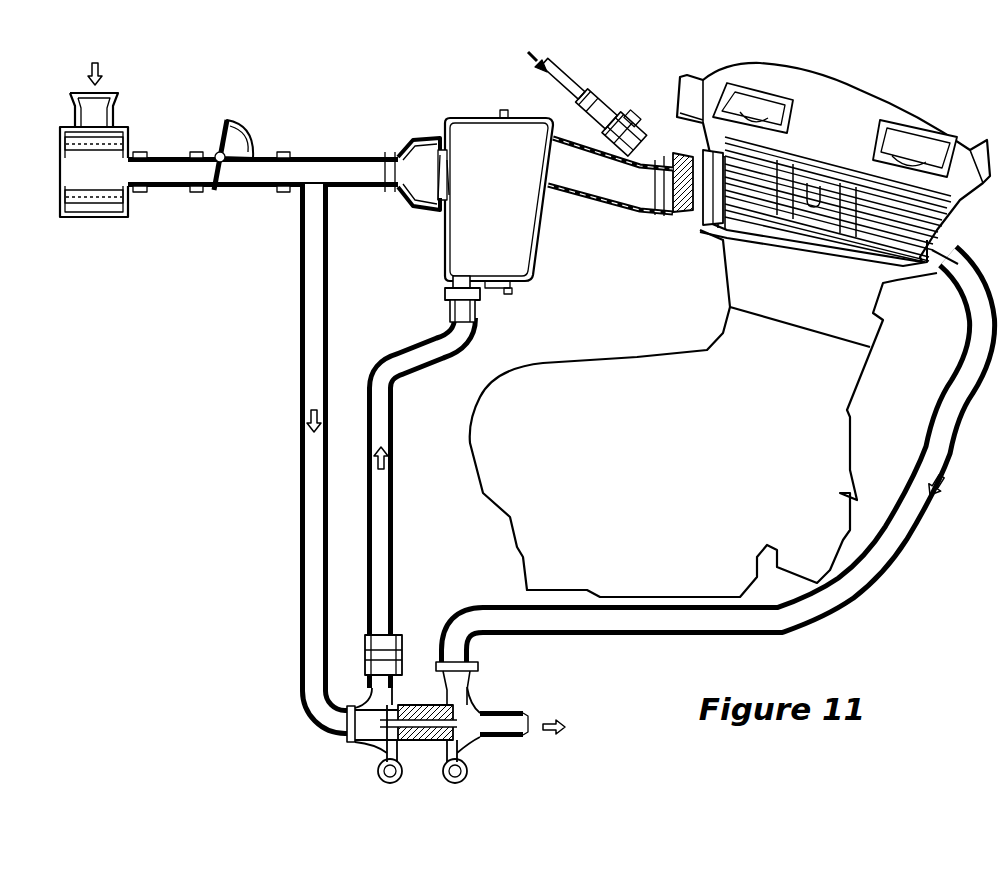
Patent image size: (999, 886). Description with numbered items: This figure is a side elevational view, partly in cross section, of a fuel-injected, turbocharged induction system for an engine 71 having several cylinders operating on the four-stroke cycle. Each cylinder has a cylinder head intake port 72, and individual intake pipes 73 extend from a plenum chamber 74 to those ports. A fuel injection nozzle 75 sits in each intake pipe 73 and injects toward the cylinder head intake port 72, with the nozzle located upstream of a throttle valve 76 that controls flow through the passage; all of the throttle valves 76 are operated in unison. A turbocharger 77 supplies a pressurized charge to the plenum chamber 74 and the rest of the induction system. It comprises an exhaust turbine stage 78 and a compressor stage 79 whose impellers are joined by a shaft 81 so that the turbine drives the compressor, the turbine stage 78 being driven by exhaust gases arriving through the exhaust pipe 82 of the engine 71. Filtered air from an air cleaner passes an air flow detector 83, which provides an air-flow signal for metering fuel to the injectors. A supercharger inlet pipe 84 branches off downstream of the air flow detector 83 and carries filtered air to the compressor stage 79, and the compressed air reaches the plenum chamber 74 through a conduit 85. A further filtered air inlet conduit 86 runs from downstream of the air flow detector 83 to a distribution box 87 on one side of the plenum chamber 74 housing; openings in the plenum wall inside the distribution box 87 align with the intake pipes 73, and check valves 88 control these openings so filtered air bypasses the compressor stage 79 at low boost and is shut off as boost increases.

The engine 71 is at (876, 84).
The cylinder head intake port 72 is at (684, 245).
The intake pipe 73 is at (573, 190).
The plenum chamber 74 is at (472, 112).
The fuel injection nozzle 75 is at (588, 100).
The throttle valve 76 is at (660, 205).
The turbocharger 77 is at (433, 735).
The exhaust turbine stage 78 is at (475, 745).
The compressor stage 79 is at (373, 748).
The shaft 81 is at (418, 745).
The exhaust pipe 82 is at (62, 193).
The air flow detector 83 is at (226, 128).
The supercharger inlet pipe 84 is at (300, 403).
The conduit 85 is at (396, 450).
The filtered air inlet conduit 86 is at (343, 162).
The distribution box 87 is at (412, 205).
The check valve 88 is at (466, 186).